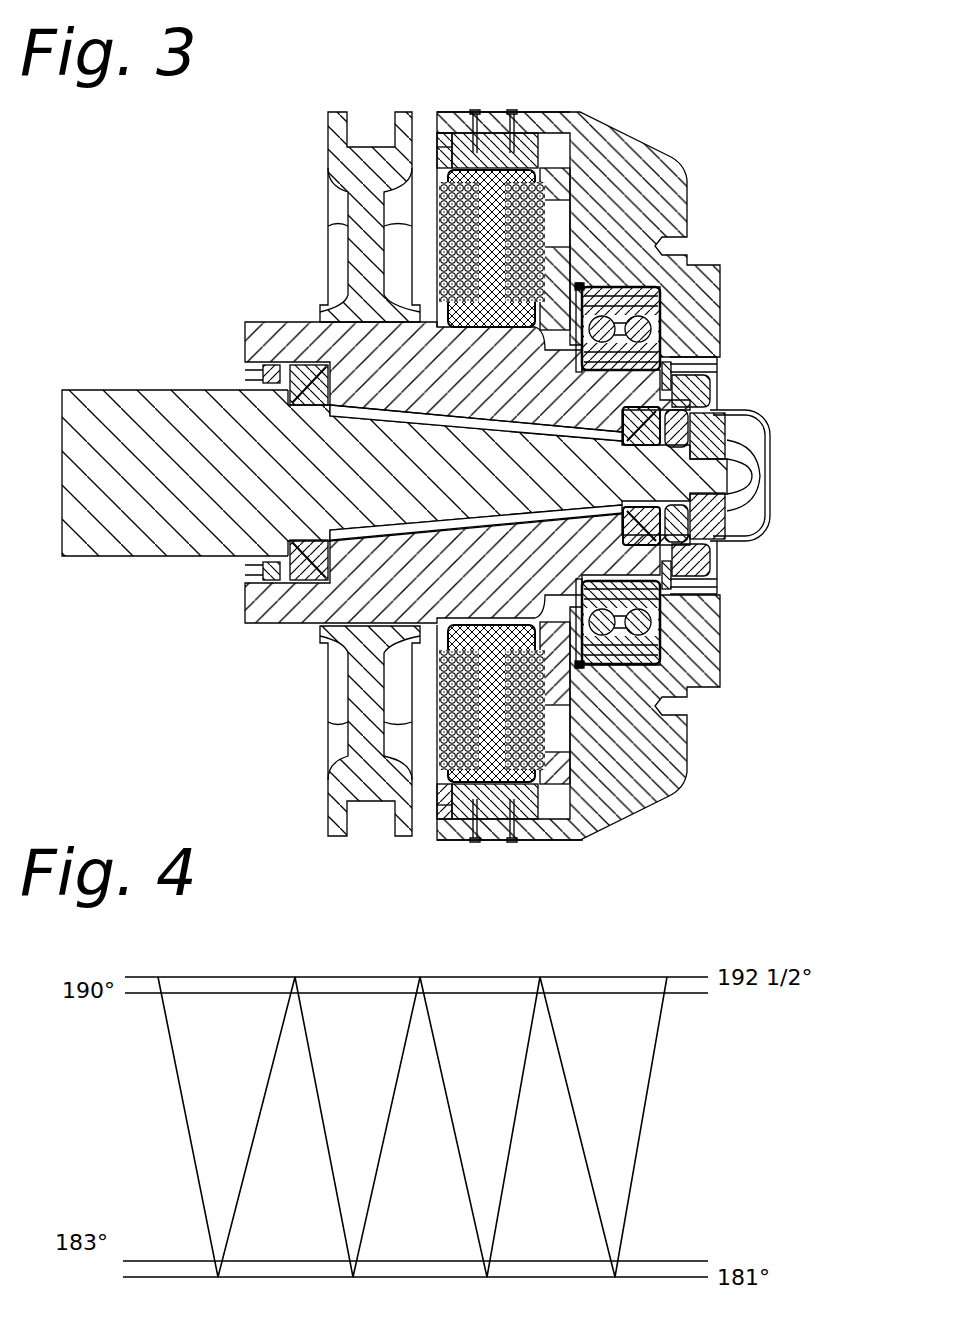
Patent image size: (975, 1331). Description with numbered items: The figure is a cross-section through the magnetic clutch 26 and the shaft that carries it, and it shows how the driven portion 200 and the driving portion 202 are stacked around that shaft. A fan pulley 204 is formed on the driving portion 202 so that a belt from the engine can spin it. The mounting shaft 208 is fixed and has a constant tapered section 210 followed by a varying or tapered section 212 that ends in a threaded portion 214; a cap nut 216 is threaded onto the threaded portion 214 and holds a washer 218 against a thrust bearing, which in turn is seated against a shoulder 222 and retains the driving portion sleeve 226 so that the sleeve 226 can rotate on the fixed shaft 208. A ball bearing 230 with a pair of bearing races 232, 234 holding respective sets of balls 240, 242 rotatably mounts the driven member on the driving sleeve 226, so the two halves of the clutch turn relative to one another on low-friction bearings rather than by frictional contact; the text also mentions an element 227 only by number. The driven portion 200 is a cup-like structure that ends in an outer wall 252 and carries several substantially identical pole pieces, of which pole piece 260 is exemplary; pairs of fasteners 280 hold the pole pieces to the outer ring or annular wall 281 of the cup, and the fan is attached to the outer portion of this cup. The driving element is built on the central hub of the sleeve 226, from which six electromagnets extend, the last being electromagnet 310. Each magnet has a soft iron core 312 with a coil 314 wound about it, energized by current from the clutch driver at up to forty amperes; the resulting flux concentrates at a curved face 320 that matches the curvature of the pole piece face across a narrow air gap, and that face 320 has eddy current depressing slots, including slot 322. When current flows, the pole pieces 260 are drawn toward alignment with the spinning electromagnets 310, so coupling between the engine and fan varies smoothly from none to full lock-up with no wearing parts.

The magnetic clutch 26 is at (453, 482).
The driven portion 200 is at (728, 256).
The driving portion 202 is at (430, 796).
The fan pulley 204 is at (328, 150).
The mounting shaft 208 is at (120, 387).
The constant tapered section 210 is at (380, 481).
The varying or tapered section 212 is at (730, 410).
The threaded portion 214 is at (718, 487).
The cap nut 216 is at (713, 443).
The washer 218 is at (717, 547).
The shoulder 222 is at (668, 392).
The driving portion sleeve 226 is at (273, 337).
The retaining plate 227 is at (710, 563).
The ball bearing 230 is at (663, 328).
The bearing race 232 is at (702, 358).
The bearing race 234 is at (668, 352).
The balls 240 is at (605, 287).
The balls 242 is at (642, 287).
The outer wall 252 is at (545, 115).
The pole piece 260 is at (447, 142).
The fasteners 280 is at (476, 110).
The outer ring or annular wall 281 is at (448, 145).
The electromagnet 310 is at (552, 827).
The soft iron core 312 is at (437, 308).
The coil 314 is at (562, 205).
The face 320 is at (460, 133).
The eddy current depressing slot 322 is at (447, 819).